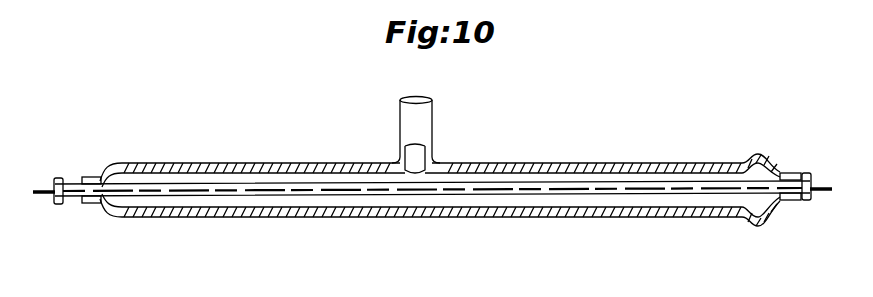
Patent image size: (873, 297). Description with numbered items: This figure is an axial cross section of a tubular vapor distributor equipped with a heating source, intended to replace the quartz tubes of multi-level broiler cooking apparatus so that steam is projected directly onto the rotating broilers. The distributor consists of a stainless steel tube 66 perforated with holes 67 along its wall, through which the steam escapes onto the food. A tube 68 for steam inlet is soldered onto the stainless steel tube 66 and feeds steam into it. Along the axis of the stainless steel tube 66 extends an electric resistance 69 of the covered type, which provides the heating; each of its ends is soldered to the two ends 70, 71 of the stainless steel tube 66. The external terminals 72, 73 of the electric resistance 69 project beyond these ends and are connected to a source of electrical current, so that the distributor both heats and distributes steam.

The stainless steel tube 66 is at (567, 163).
The holes 67 is at (180, 217).
The tube for steam inlet 68 is at (430, 130).
The electric resistance 69 is at (233, 190).
The end of tube 70 is at (94, 178).
The end of tube 71 is at (780, 172).
The external terminal 72 is at (820, 195).
The external terminal 73 is at (48, 195).